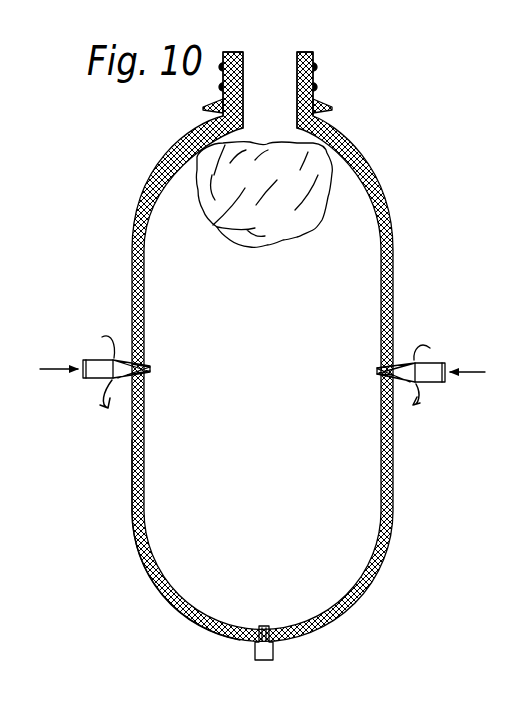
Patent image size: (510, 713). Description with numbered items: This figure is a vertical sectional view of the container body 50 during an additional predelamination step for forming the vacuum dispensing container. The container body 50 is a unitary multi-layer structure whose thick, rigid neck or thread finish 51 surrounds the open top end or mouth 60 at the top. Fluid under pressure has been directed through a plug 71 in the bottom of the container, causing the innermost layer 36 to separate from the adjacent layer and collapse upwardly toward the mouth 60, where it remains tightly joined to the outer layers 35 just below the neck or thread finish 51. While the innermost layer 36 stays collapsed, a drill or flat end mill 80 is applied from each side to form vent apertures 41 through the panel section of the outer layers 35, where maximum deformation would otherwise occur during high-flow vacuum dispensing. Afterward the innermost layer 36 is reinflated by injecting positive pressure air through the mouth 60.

The container body 50 is at (129, 258).
The outer layers 35 is at (133, 520).
The open top end or mouth 60 is at (285, 52).
The neck or thread finish 51 is at (318, 82).
The innermost layer 36 is at (313, 228).
The drill or flat end mill 80 is at (87, 359).
The vent apertures 41 is at (152, 372).
The plug 71 is at (275, 655).